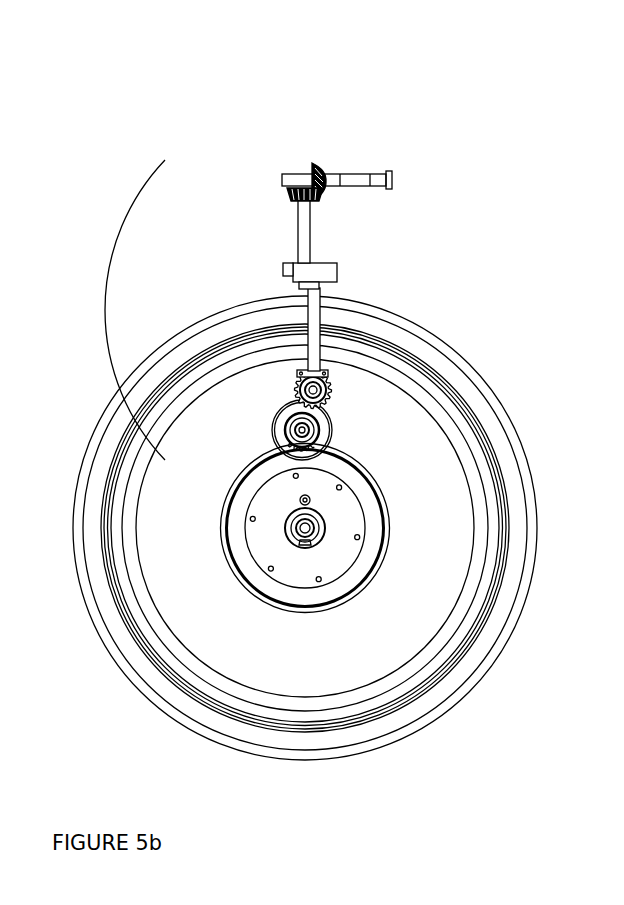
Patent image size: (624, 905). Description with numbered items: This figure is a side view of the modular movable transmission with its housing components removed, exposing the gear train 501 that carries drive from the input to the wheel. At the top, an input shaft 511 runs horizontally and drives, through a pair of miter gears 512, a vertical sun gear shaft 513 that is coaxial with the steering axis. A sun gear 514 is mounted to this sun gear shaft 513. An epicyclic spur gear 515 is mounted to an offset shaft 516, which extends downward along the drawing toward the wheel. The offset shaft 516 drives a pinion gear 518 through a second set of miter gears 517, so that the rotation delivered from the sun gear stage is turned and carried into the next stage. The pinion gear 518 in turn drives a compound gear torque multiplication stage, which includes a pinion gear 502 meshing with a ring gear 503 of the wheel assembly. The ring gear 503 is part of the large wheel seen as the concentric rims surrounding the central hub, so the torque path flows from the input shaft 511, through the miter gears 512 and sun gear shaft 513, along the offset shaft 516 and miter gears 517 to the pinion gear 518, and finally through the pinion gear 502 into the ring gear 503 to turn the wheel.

The gear train 501 is at (108, 259).
The pinion gear 502 is at (329, 427).
The ring gear 503 is at (371, 589).
The input shaft 511 is at (369, 175).
The miter gears 512 is at (298, 172).
The sun gear shaft 513 is at (311, 236).
The sun gear 514 is at (281, 262).
The epicyclic spur gear 515 is at (341, 269).
The offset shaft 516 is at (312, 323).
The miter gears 517 is at (336, 369).
The pinion gear 518 is at (336, 380).